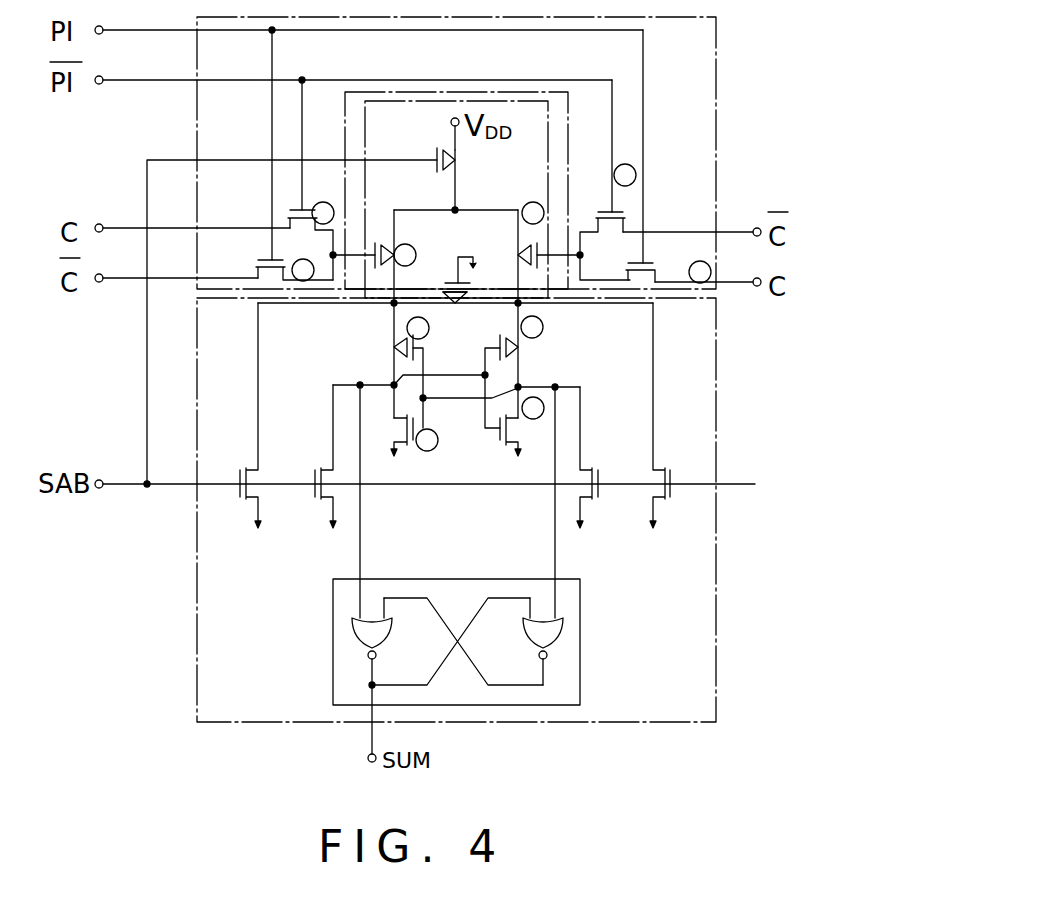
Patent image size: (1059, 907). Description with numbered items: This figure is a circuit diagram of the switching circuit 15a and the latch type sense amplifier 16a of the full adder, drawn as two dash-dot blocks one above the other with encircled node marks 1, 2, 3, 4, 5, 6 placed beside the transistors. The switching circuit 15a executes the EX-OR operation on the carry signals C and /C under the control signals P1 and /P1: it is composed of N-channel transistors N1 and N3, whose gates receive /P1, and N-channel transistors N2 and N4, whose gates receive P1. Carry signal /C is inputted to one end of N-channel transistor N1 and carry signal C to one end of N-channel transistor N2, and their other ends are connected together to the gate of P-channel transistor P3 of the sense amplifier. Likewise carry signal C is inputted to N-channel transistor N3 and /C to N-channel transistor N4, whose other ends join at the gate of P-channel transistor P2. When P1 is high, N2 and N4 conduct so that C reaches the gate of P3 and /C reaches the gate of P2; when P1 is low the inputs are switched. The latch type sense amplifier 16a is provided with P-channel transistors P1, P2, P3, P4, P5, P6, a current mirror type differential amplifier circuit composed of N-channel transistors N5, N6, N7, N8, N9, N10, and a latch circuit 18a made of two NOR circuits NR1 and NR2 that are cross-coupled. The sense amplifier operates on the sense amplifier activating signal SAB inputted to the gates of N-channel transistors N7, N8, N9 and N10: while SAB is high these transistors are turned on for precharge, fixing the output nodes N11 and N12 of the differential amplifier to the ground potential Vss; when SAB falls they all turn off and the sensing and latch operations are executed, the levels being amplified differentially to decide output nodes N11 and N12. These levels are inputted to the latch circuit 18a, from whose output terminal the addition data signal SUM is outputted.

The switching circuit 15a is at (718, 108).
The latch type sense amplifier 16a is at (718, 388).
The latch circuit 18a is at (456, 642).
The P-channel transistor P1 is at (437, 158).
The P-channel transistor P2 is at (396, 259).
The P-channel transistor P3 is at (519, 263).
The P-channel transistor P4 is at (459, 305).
The P-channel transistor P5 is at (520, 349).
The P-channel transistor P6 is at (398, 344).
The N-channel transistor N1 is at (598, 226).
The N-channel transistor N2 is at (660, 276).
The N-channel transistor N3 is at (306, 208).
The N-channel transistor N4 is at (268, 283).
The N-channel transistor N5 is at (520, 430).
The N-channel transistor N6 is at (415, 426).
The N-channel transistor N7 is at (593, 472).
The N-channel transistor N8 is at (666, 472).
The N-channel transistor N9 is at (315, 472).
The N-channel transistor N10 is at (240, 472).
The output node N11 is at (363, 565).
The output node N12 is at (553, 568).
The NOR circuit NR1 is at (563, 645).
The NOR circuit NR2 is at (352, 640).
The node 1 is at (579, 194).
The node 2 is at (616, 299).
The node 3 is at (364, 234).
The node 4 is at (360, 299).
The node 5 is at (533, 408).
The node 6 is at (427, 440).